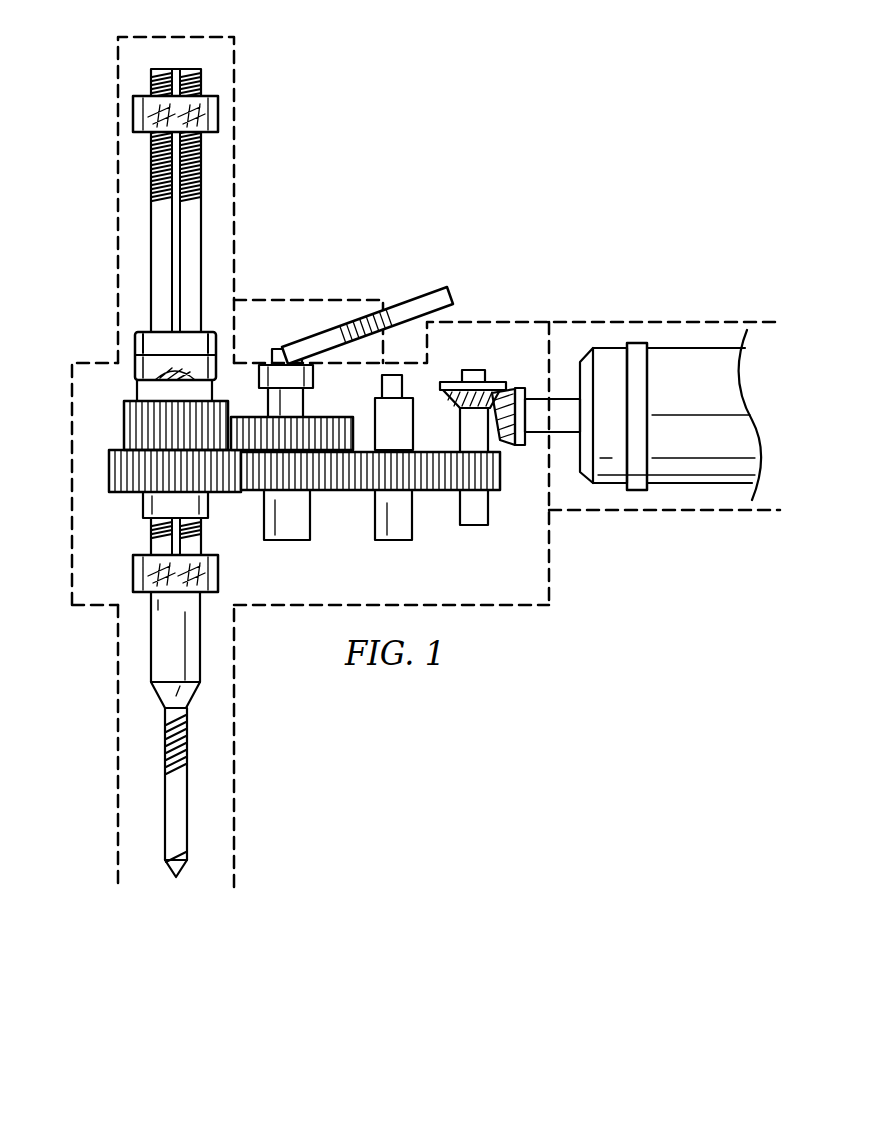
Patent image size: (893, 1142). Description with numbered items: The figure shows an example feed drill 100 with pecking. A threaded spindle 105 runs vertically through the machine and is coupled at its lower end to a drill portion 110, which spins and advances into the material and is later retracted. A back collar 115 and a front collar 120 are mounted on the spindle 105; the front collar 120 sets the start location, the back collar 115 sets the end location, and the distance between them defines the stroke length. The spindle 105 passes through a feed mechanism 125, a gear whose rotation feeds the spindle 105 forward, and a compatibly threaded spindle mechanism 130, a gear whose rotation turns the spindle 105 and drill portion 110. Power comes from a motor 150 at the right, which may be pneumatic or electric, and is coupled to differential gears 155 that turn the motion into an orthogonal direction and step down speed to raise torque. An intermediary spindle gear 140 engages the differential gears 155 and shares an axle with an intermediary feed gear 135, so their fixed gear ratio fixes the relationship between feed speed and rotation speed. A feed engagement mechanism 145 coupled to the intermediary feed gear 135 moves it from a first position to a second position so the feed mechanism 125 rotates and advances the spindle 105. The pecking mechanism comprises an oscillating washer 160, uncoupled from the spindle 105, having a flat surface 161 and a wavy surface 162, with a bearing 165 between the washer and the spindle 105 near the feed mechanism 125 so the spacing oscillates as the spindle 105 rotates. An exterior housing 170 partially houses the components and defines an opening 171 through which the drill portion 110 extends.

The feed drill 100 is at (546, 20).
The spindle 105 is at (186, 69).
The drill portion 110 is at (183, 818).
The back collar 115 is at (133, 113).
The front collar 120 is at (133, 572).
The feed mechanism 125 is at (124, 425).
The spindle mechanism 130 is at (109, 468).
The intermediary feed gear 135 is at (325, 420).
The intermediary spindle gear 140 is at (317, 490).
The feed engagement mechanism 145 is at (455, 296).
The motor 150 is at (652, 360).
The differential gears 155 is at (420, 490).
The oscillating washer 160 is at (198, 286).
The flat surface 161 is at (206, 343).
The wavy surface 162 is at (245, 372).
The bearing 165 is at (137, 388).
The exterior housing 170 is at (118, 210).
The opening 171 is at (210, 885).